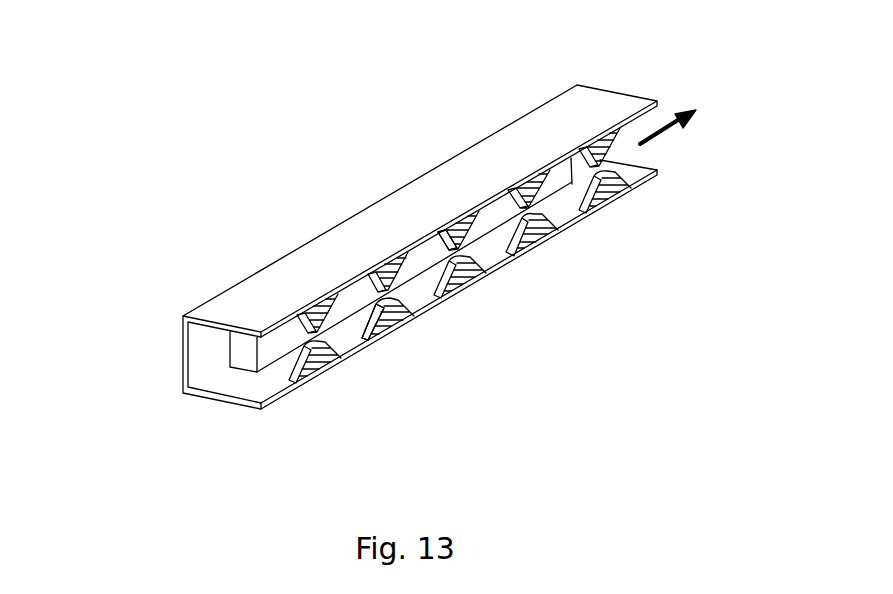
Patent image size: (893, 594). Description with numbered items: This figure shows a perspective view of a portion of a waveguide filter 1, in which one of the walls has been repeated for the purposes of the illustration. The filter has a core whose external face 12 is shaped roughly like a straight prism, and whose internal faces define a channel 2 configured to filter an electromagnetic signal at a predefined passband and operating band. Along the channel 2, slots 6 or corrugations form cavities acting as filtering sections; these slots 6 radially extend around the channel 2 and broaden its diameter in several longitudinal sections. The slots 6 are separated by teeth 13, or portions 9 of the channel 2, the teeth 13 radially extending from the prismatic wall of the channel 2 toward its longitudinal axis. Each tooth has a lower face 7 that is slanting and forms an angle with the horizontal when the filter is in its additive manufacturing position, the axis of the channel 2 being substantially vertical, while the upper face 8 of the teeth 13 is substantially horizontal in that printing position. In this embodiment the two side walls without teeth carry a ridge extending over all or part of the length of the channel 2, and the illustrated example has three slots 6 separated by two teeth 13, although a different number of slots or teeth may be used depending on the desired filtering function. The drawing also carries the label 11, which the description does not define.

The waveguide filter 1 is at (150, 455).
The channel 2 is at (240, 387).
The slots 6 is at (417, 297).
The lower face 7 is at (598, 206).
The upper face 8 is at (646, 179).
The portions of the channel 9 is at (530, 207).
The lower flange 11 is at (508, 268).
The external face 12 is at (350, 235).
The teeth 13 is at (395, 328).